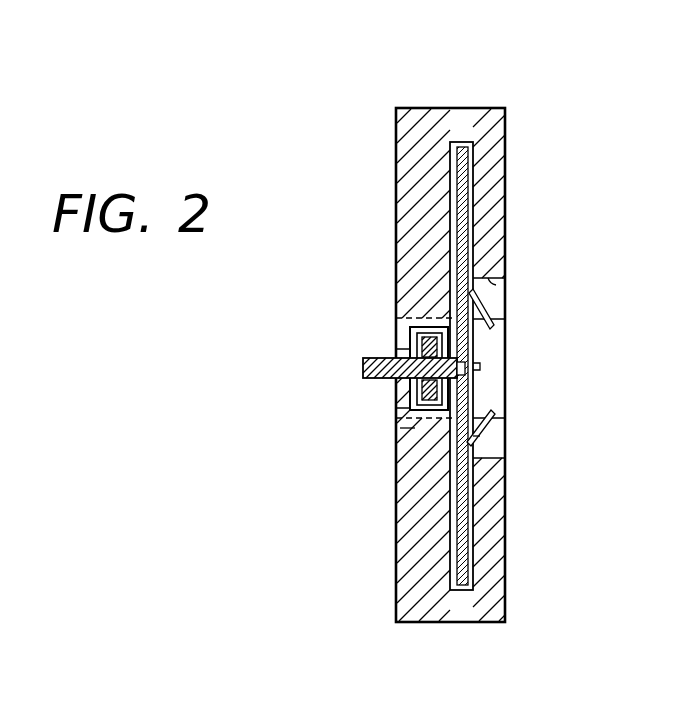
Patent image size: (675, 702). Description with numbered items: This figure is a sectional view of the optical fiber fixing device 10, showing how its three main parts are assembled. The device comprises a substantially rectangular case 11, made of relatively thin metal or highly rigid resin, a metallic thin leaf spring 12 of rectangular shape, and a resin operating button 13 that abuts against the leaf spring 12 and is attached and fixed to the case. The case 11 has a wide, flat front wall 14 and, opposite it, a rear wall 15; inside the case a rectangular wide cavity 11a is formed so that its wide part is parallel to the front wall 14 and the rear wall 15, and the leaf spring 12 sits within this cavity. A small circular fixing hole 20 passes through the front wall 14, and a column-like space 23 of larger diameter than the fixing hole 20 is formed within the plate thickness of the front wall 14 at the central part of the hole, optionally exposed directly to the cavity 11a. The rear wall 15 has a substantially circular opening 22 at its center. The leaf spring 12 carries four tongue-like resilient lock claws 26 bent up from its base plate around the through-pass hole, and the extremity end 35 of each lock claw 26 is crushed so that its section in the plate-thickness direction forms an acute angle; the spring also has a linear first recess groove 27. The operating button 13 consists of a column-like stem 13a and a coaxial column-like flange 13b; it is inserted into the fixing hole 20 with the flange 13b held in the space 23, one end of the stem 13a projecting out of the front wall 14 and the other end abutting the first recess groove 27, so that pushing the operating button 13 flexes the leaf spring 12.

The optical fiber fixing device 10 is at (474, 109).
The case 11 is at (505, 120).
The cavity 11a is at (458, 162).
The leaf spring 12 is at (464, 193).
The operating button 13 is at (370, 380).
The stem 13a is at (363, 366).
The flange 13b is at (400, 428).
The front wall 14 is at (396, 245).
The rear wall 15 is at (505, 240).
The fixing hole 20 is at (410, 352).
The opening 22 is at (495, 290).
The space 23 is at (413, 330).
The lock claws 26 is at (473, 436).
The first recess groove 27 is at (470, 367).
The extremity end 35 is at (495, 405).